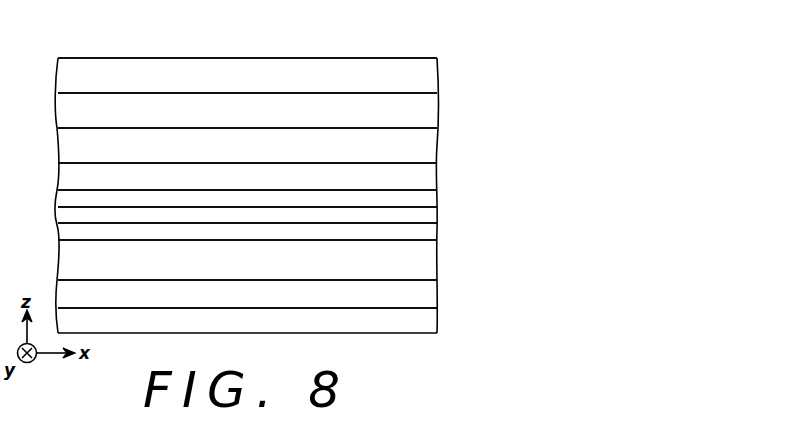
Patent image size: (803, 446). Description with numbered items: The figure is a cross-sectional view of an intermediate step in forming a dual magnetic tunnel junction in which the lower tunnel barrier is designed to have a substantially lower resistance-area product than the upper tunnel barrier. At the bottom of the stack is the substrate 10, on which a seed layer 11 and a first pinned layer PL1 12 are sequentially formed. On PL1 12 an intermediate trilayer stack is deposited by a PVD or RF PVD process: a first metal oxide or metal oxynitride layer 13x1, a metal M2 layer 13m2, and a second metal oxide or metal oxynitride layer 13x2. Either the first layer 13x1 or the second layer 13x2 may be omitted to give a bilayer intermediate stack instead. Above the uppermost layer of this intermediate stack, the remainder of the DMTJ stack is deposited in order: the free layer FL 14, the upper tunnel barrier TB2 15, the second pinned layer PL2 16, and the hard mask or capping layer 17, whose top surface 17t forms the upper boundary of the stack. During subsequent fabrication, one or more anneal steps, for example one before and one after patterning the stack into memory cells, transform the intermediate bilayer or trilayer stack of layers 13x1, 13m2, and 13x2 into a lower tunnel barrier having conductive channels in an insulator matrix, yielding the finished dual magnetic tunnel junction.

The top surface of hard mask 17t is at (374, 56).
The hard mask or capping layer 17 is at (428, 78).
The PL2 16 is at (428, 113).
The TB2 15 is at (428, 147).
The FL 14 is at (428, 178).
The second MOx or MON layer 13x2 is at (428, 199).
The M2 layer 13m2 is at (428, 216).
The first MOx or MON layer 13x1 is at (428, 232).
The PL1 12 is at (428, 262).
The seed layer 11 is at (428, 293).
The substrate 10 is at (428, 320).